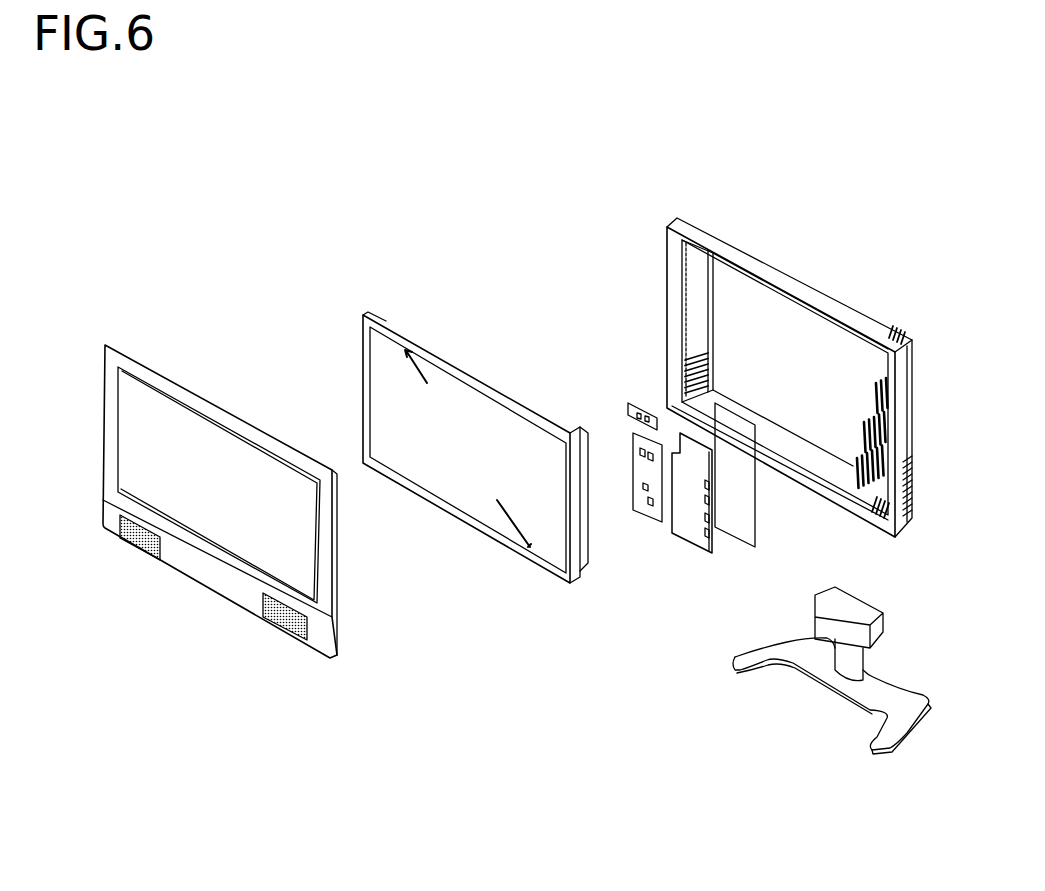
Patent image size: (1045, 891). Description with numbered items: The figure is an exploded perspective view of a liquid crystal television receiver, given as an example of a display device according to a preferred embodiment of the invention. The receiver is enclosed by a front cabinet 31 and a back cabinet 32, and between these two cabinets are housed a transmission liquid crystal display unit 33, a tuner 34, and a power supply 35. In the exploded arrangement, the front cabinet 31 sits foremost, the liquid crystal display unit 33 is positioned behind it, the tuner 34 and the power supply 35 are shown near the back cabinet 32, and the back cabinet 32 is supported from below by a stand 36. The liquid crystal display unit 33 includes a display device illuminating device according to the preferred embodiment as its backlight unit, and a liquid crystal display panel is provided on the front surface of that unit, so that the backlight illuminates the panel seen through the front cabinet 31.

The front cabinet 31 is at (112, 345).
The back cabinet 32 is at (704, 222).
The transmission liquid crystal display unit 33 is at (370, 315).
The tuner 34 is at (632, 403).
The power supply 35 is at (687, 547).
The stand 36 is at (912, 697).